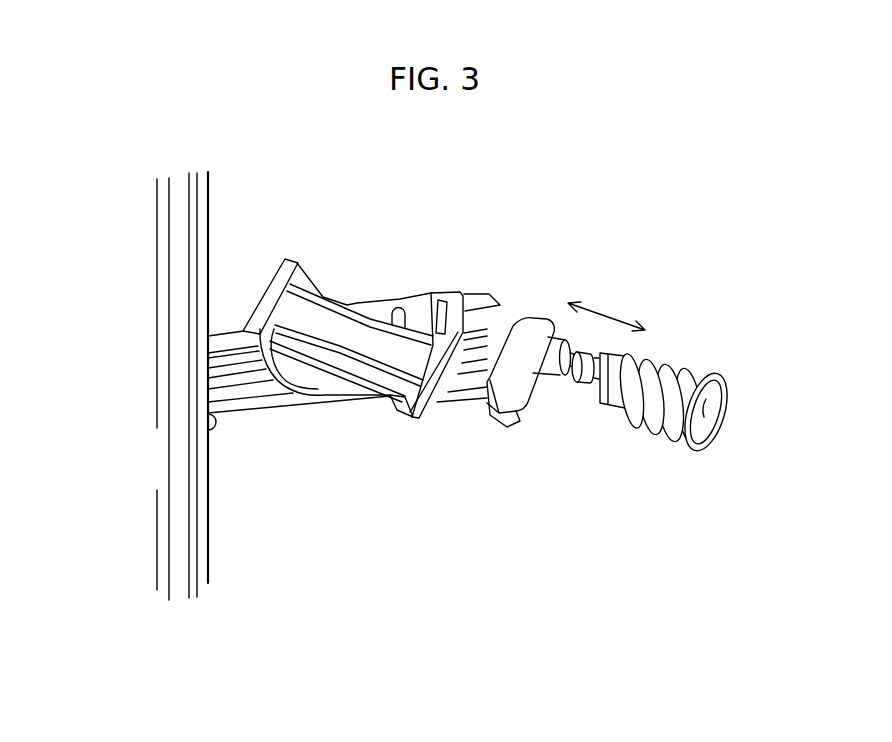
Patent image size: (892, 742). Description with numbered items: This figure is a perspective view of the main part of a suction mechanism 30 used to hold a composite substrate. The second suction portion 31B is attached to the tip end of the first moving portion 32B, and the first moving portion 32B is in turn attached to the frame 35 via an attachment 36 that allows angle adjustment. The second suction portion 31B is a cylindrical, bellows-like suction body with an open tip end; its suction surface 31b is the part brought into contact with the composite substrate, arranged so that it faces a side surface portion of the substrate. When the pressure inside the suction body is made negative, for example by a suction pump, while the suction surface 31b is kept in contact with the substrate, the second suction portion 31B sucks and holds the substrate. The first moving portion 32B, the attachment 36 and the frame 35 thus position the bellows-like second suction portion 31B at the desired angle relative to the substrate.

The suction unit 30 is at (382, 206).
The second suction portion 31B is at (652, 424).
The suction surface 31b is at (722, 424).
The first moving portion 32B is at (567, 382).
The frame 35 is at (170, 426).
The attachment 36 is at (369, 395).